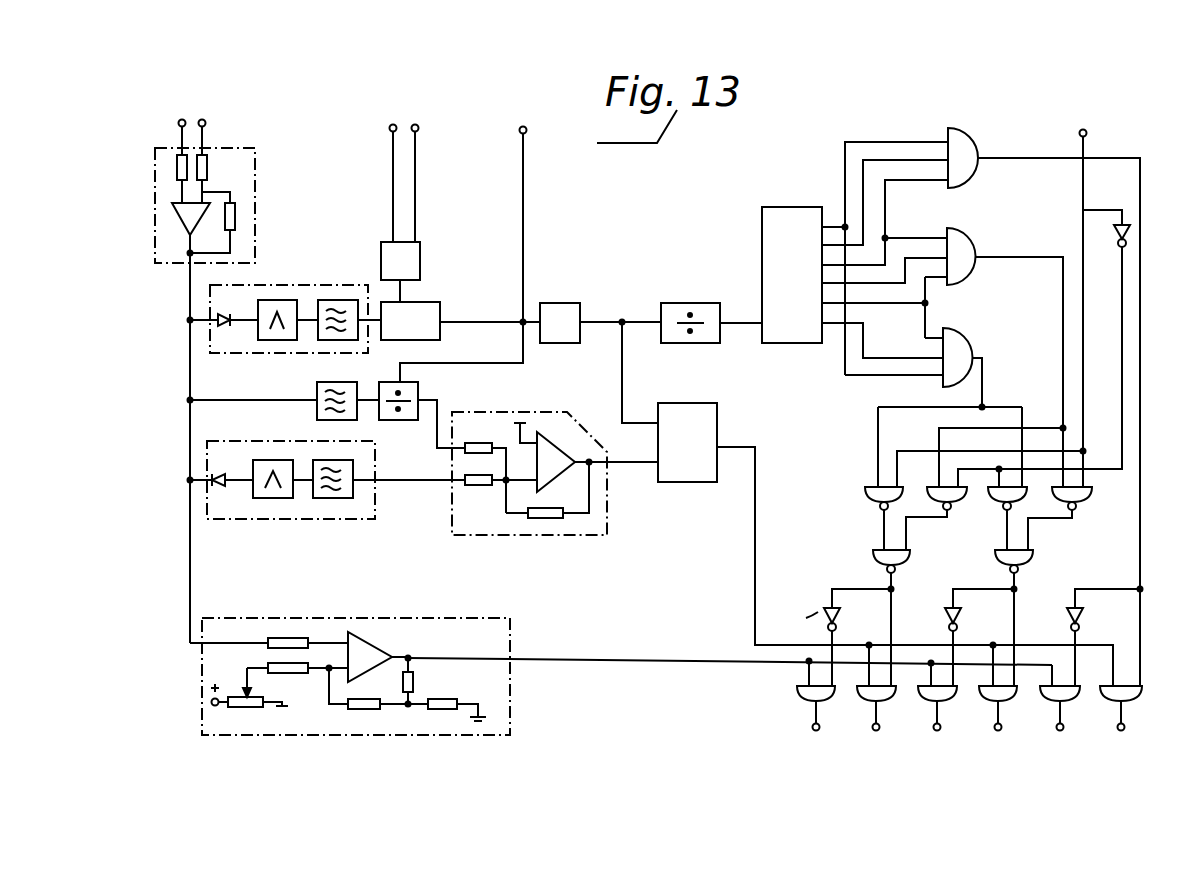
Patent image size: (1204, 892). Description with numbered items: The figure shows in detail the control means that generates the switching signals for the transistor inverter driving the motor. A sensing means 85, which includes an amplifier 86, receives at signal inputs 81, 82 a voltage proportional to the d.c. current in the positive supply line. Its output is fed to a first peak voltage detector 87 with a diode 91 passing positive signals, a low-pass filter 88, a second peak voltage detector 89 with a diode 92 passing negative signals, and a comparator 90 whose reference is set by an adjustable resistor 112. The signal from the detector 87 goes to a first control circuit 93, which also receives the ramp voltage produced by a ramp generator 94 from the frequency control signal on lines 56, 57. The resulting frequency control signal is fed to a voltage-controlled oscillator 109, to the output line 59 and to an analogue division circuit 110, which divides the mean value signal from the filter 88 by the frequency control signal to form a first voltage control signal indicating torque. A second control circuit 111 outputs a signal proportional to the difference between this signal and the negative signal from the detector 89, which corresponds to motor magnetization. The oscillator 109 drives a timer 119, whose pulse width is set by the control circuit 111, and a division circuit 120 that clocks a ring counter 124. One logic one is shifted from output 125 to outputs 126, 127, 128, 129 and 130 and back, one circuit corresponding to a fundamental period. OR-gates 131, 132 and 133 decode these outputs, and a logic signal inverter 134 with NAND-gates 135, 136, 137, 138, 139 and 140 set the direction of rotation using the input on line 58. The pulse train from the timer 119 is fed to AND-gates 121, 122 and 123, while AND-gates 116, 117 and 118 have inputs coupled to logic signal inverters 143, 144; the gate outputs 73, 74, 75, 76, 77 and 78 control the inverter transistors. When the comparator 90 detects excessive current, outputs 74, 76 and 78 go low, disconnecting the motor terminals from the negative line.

The signal line 56 is at (389, 127).
The signal line 57 is at (419, 127).
The signal line 58 is at (1087, 131).
The output line 59 is at (526, 127).
The output 73 is at (1117, 730).
The output 74 is at (1056, 730).
The output 75 is at (994, 730).
The output 76 is at (933, 730).
The output 77 is at (872, 730).
The output 78 is at (812, 730).
The signal input 81 is at (180, 119).
The signal input 82 is at (204, 119).
The sensing means 85 is at (255, 170).
The amplifier 86 is at (183, 213).
The first peak voltage detector 87 is at (278, 285).
The low-pass filter 88 is at (317, 384).
The second peak voltage detector 89 is at (268, 519).
The comparator 90 is at (336, 618).
The diode 91 is at (224, 326).
The diode 92 is at (220, 486).
The first control circuit 93 is at (430, 302).
The ramp generator 94 is at (420, 257).
The voltage-controlled oscillator 109 is at (560, 303).
The analogue division circuit 110 is at (399, 420).
The second control circuit 111 is at (500, 535).
The adjustable resistor 112 is at (245, 710).
The AND-gate 116 is at (1050, 698).
The AND-gate 117 is at (926, 698).
The AND-gate 118 is at (800, 696).
The timer 119 is at (688, 482).
The division circuit 120 is at (668, 303).
The AND-gate 121 is at (1110, 698).
The AND-gate 122 is at (988, 698).
The AND-gate 123 is at (866, 698).
The ring counter 124 is at (762, 210).
The output 125 is at (822, 214).
The output 126 is at (822, 245).
The output 127 is at (822, 265).
The output 128 is at (822, 283).
The output 129 is at (822, 300).
The output 130 is at (822, 328).
The OR-gate 131 is at (968, 136).
The OR-gate 132 is at (978, 228).
The OR-gate 133 is at (964, 336).
The logic signal inverter 134 is at (1128, 228).
The NAND-gate 135 is at (1082, 500).
The NAND-gate 136 is at (998, 502).
The NAND-gate 137 is at (956, 500).
The NAND-gate 138 is at (865, 492).
The NAND-gate 139 is at (1031, 560).
The NAND-gate 140 is at (908, 560).
The logic signal inverter 143 is at (943, 614).
The logic signal inverter 144 is at (1066, 614).